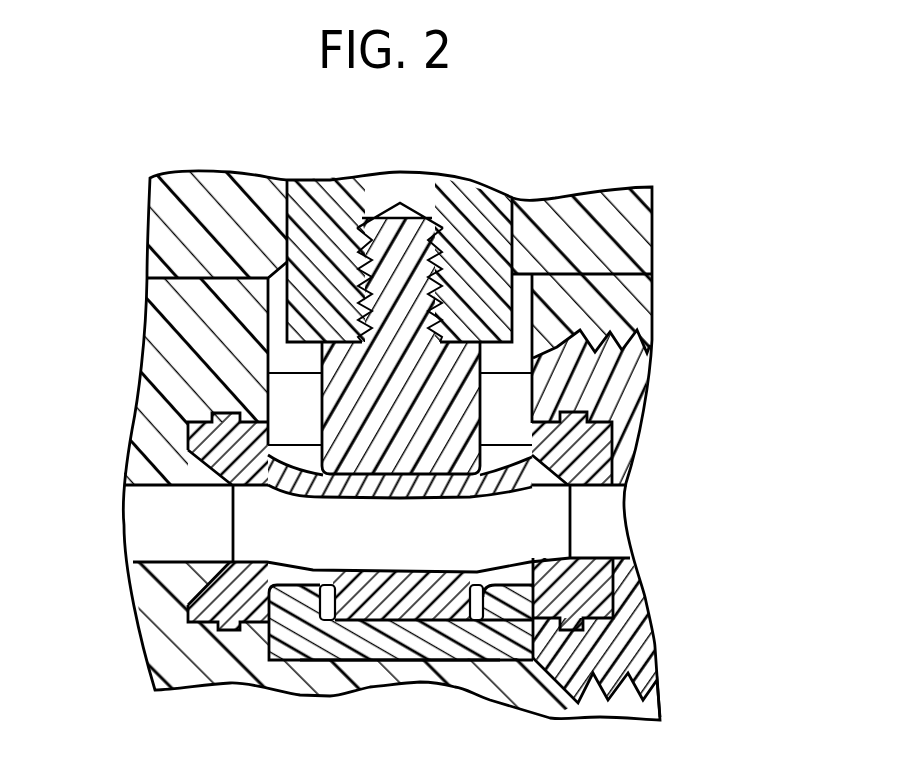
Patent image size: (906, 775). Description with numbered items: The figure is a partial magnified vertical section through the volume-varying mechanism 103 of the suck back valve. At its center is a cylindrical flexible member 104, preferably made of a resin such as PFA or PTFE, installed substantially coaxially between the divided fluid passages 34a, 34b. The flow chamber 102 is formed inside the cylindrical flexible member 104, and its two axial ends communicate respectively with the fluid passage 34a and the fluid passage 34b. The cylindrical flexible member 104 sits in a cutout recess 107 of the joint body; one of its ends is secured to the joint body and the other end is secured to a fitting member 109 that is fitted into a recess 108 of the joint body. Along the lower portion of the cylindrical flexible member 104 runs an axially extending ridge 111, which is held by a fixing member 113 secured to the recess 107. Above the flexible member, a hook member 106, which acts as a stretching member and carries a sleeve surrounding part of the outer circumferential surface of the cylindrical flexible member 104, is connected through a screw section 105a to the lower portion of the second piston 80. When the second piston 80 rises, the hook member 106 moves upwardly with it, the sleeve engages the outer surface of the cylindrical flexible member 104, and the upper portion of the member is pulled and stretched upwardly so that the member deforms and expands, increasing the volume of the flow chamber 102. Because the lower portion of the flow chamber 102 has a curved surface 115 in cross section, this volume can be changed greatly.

The second piston 80 is at (484, 178).
The screw section 105a is at (345, 248).
The volume-varying mechanism 103 is at (505, 354).
The hook member 106 is at (387, 400).
The cutout recess 107 is at (300, 457).
The fitting member 109 is at (607, 388).
The cylindrical flexible member 104 is at (375, 490).
The fluid passage 34a is at (176, 562).
The fluid passage 34b is at (600, 563).
The flow chamber 102 is at (490, 640).
The ridge 111 is at (357, 673).
The fixing member 113 is at (475, 645).
The curved surface 115 is at (382, 598).
The recess 108 is at (628, 652).